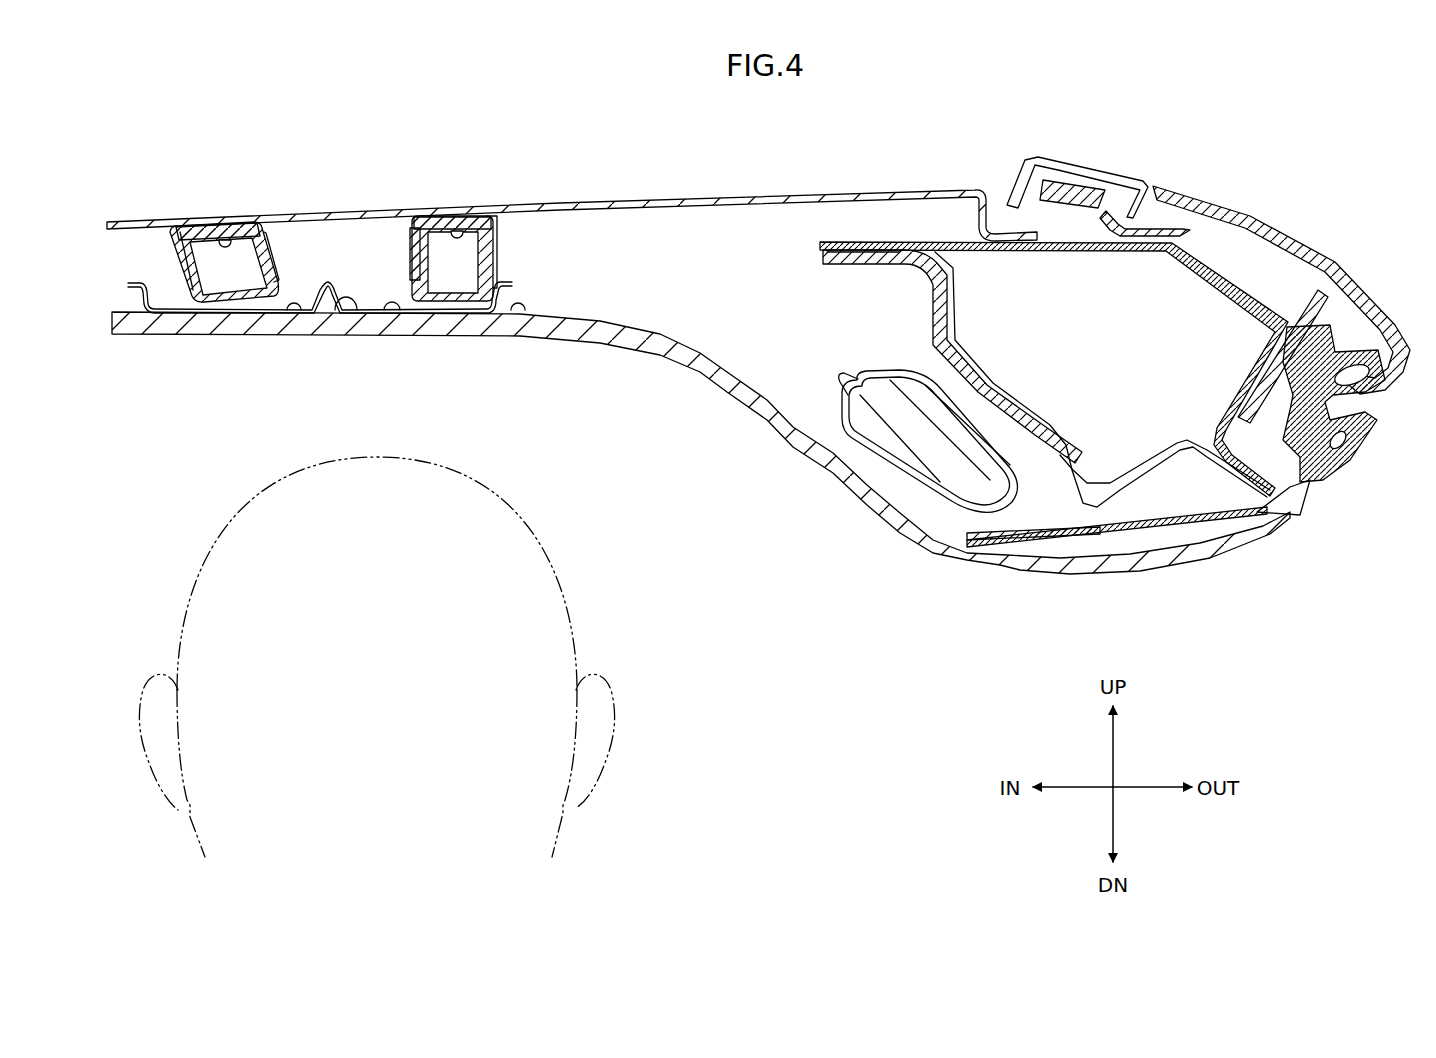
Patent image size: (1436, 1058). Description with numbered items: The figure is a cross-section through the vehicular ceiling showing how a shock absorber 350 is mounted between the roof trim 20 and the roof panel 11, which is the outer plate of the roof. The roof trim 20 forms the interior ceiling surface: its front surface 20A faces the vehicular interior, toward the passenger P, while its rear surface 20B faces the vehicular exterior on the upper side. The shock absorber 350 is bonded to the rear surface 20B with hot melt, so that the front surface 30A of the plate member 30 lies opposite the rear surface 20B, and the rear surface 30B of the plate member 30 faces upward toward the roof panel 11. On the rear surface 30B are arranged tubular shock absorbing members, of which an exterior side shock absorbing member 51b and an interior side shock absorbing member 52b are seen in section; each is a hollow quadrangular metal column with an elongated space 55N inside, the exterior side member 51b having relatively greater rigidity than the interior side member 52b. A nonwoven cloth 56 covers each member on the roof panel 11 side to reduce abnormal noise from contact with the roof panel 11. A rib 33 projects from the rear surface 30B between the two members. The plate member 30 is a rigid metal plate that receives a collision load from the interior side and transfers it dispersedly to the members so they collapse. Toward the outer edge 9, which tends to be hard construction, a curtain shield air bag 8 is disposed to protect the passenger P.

The shock absorber 350 is at (314, 249).
The interior side shock absorbing member 52b is at (206, 224).
The exterior side shock absorbing member 51b is at (433, 220).
The elongated space 55N is at (225, 240).
The nonwoven cloth 56 is at (228, 224).
The roof panel 11 is at (703, 199).
The outer edge 9 is at (1382, 298).
The plate member 30 is at (326, 342).
The front surface 30A is at (180, 320).
The rear surface 30B is at (403, 317).
The rib 33 is at (357, 305).
The roof trim 20 is at (640, 350).
The front surface 20A is at (716, 390).
The rear surface 20B is at (522, 323).
The curtain shield air bag 8 is at (913, 507).
The passenger P is at (528, 830).